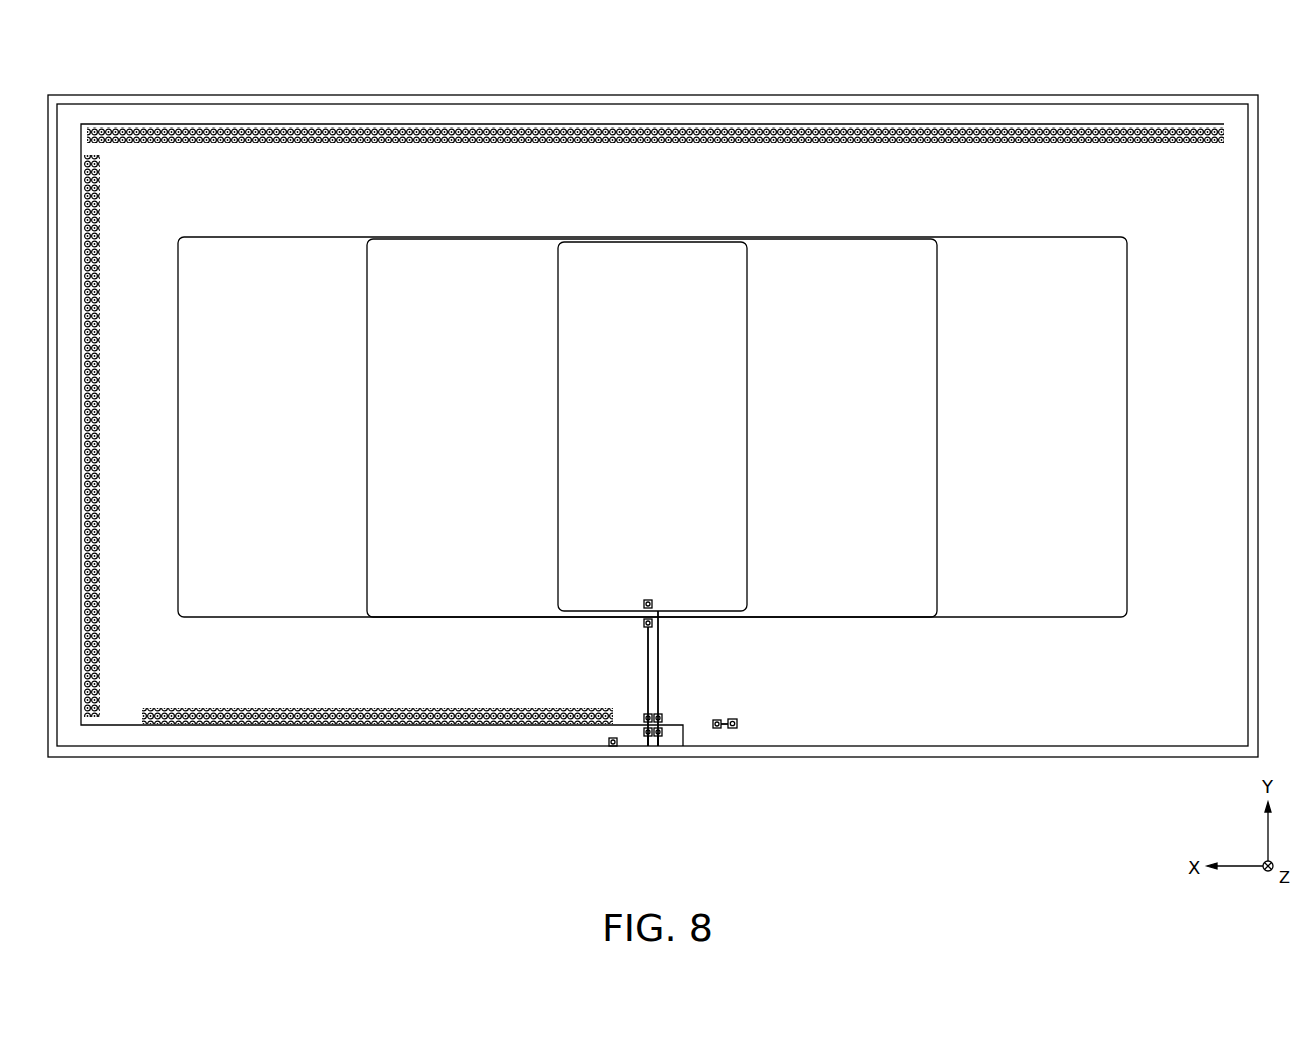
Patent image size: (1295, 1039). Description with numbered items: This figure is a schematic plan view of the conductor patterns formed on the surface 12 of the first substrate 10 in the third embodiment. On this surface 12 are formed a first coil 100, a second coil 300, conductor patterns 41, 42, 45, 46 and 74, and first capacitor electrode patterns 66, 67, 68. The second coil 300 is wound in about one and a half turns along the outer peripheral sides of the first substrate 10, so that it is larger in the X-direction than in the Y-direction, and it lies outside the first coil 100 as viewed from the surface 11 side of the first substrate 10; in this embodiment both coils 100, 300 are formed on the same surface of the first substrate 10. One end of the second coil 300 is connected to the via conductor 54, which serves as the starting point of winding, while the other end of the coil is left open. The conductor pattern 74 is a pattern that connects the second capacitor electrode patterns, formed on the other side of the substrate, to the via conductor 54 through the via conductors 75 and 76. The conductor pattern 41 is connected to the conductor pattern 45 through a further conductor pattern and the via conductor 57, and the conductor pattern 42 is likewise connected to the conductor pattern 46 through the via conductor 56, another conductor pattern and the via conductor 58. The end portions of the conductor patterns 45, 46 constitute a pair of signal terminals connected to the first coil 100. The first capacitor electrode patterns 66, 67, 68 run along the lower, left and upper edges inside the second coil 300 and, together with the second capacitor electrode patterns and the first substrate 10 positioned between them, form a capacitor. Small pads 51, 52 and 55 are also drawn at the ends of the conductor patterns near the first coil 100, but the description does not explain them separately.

The first substrate 10 is at (1232, 95).
The surface 11 is at (630, 565).
The surface 12 is at (1135, 118).
The conductor pattern 41 is at (660, 663).
The conductor pattern 42 is at (647, 662).
The conductor pattern 45 is at (659, 737).
The conductor pattern 46 is at (647, 737).
The first terminal 51 is at (643, 604).
The second terminal 52 is at (643, 623).
The via conductor 54 is at (613, 746).
The terminal 55 is at (662, 715).
The via conductor 56 is at (644, 715).
The via conductor 57 is at (663, 732).
The via conductor 58 is at (645, 733).
The first capacitor electrode pattern 66 is at (383, 702).
The first capacitor electrode pattern 67 is at (101, 413).
The first capacitor electrode pattern 68 is at (620, 157).
The conductor pattern 74 is at (724, 728).
The via conductor 75 is at (718, 721).
The via conductor 76 is at (737, 724).
The first coil 100 is at (1017, 217).
The second coil 300 is at (1237, 425).